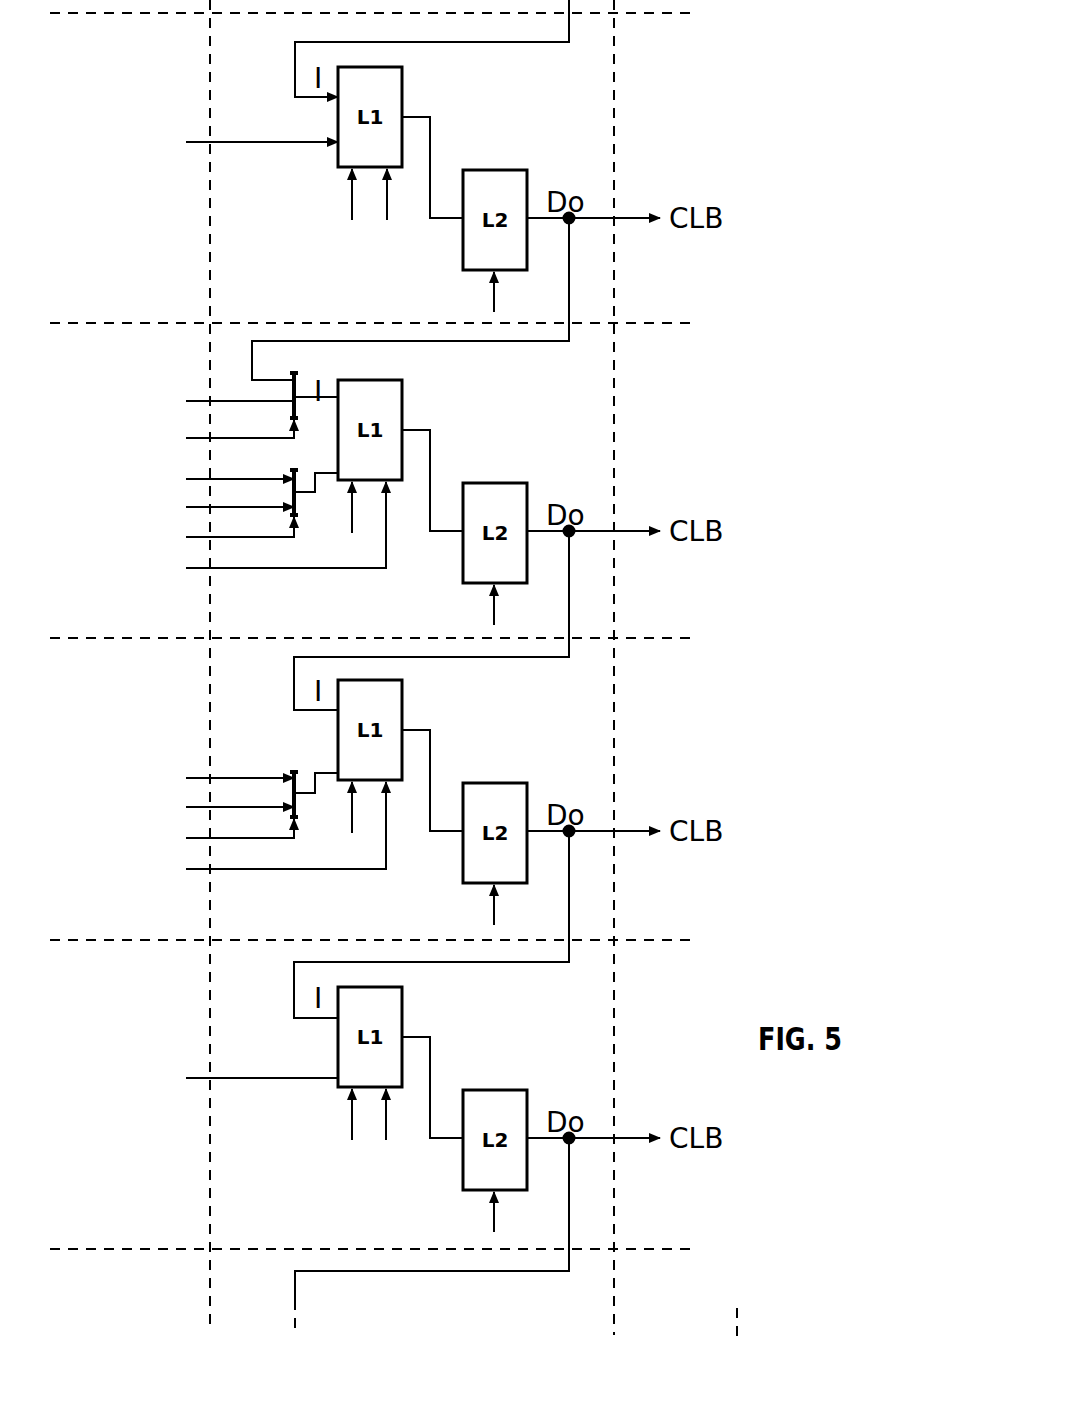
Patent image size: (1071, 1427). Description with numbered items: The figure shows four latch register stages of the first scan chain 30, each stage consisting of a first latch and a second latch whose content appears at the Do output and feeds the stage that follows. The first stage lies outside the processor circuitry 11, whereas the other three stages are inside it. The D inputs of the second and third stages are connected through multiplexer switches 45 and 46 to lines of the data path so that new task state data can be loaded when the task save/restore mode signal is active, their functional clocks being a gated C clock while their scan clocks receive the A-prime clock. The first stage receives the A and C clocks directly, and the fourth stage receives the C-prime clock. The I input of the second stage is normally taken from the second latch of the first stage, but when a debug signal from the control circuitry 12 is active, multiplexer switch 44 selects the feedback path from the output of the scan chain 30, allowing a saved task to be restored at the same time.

The processor circuitry 11 is at (741, 1308).
The control circuitry 12 is at (735, 325).
The first scan chain 30 is at (215, 401).
The multiplexer switch 44 is at (293, 372).
The multiplexer switch 45 is at (293, 470).
The multiplexer switch 46 is at (292, 770).